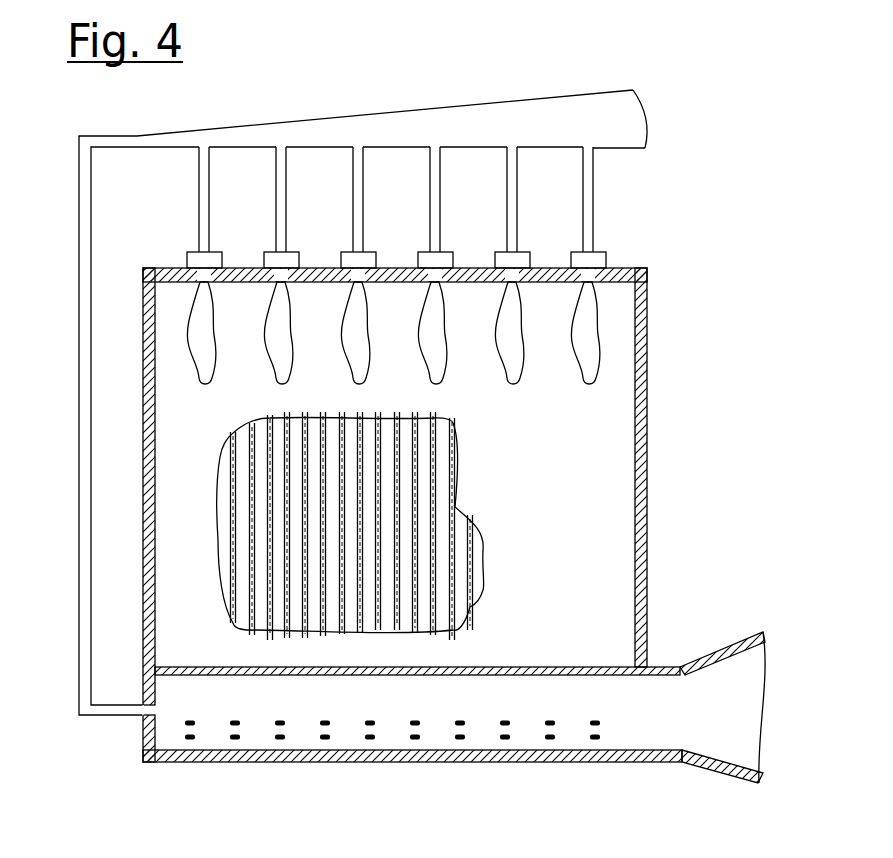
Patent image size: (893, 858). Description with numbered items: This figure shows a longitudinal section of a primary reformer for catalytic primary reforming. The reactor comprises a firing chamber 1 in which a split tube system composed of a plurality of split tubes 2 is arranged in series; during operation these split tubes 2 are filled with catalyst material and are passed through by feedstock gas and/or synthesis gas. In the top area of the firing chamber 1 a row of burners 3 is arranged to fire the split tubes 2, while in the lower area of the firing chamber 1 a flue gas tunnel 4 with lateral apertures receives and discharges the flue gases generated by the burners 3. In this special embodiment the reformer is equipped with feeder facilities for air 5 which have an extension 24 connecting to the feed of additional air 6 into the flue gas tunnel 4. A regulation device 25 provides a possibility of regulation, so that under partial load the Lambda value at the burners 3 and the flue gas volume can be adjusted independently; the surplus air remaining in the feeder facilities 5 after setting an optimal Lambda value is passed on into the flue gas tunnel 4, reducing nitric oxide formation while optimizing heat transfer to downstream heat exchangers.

The firing chamber 1 is at (648, 418).
The split tubes 2 is at (478, 570).
The burner 3 is at (372, 247).
The flue gas tunnel 4 is at (528, 658).
The feeder facilities for air 5 is at (655, 118).
The additional air 6 is at (138, 710).
The extension 24 is at (98, 277).
The regulation device 25 is at (80, 665).